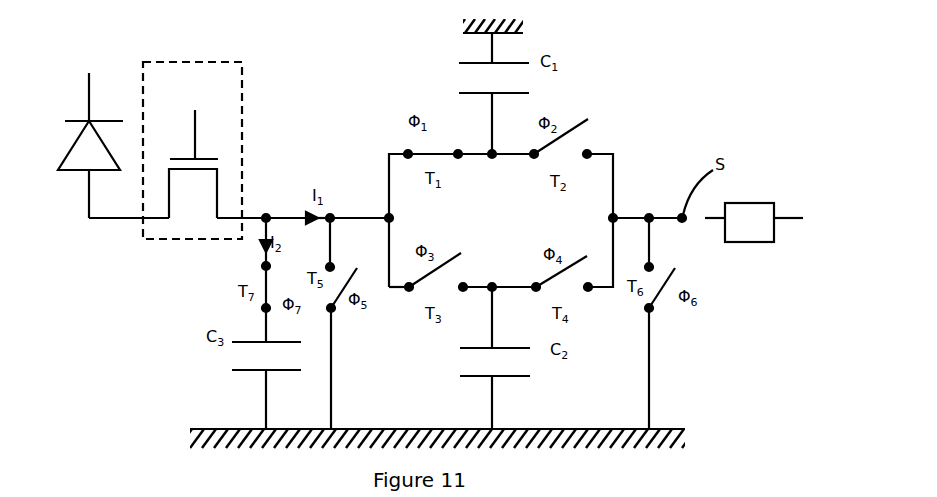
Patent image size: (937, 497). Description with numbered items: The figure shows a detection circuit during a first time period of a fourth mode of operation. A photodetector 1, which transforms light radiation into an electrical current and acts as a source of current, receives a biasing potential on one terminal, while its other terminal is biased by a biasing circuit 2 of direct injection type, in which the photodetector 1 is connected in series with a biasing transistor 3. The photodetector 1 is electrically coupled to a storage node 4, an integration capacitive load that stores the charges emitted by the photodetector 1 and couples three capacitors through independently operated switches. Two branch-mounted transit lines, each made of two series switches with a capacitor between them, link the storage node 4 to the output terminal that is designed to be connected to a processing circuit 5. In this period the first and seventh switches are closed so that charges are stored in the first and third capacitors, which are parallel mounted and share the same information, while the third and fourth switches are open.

The photodetector 1 is at (70, 147).
The biasing circuit 2 is at (242, 120).
The biasing transistor 3 is at (218, 196).
The storage node 4 is at (389, 217).
The processing circuit 5 is at (754, 222).